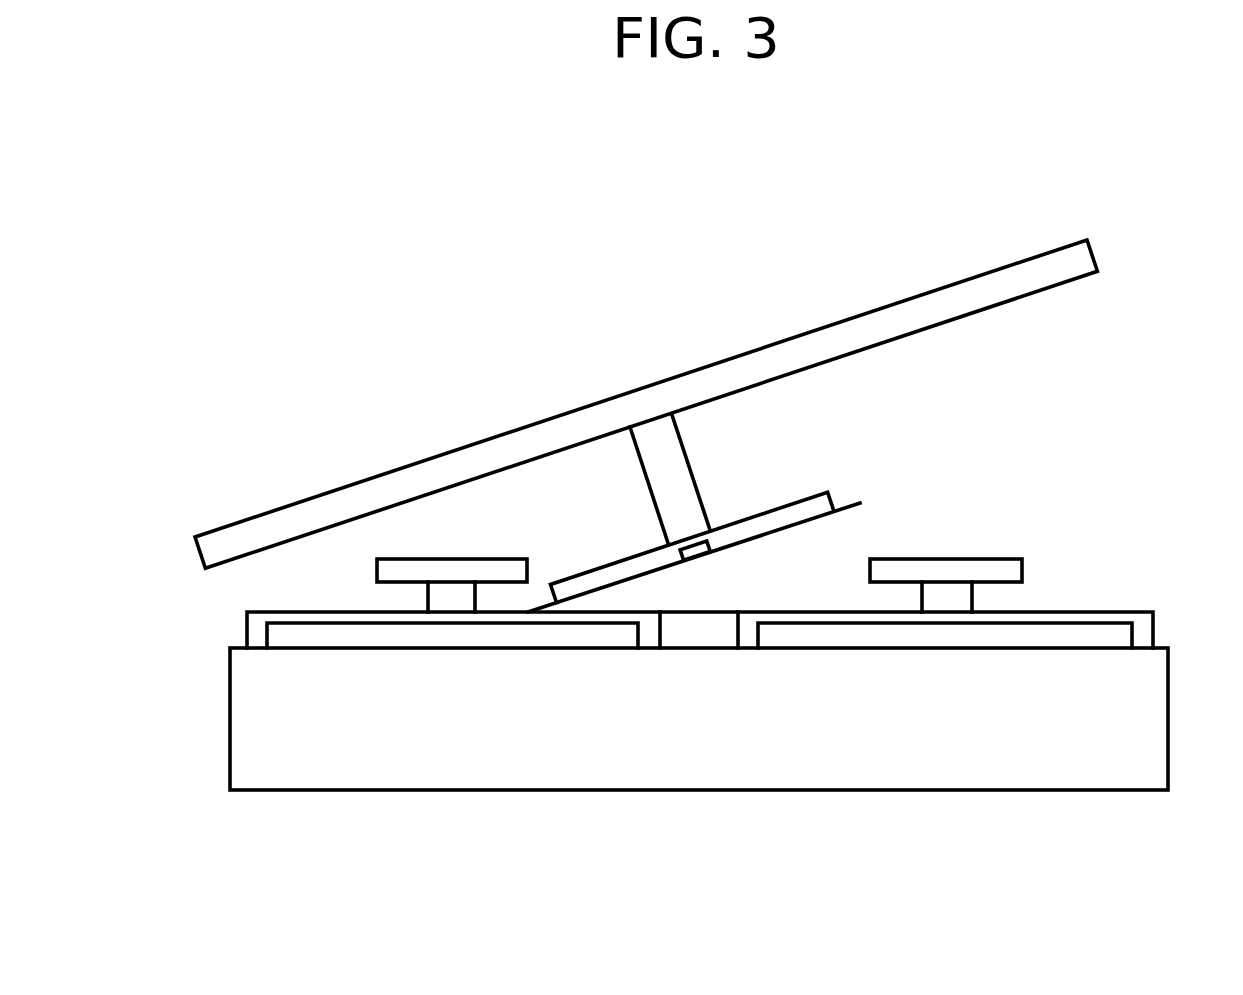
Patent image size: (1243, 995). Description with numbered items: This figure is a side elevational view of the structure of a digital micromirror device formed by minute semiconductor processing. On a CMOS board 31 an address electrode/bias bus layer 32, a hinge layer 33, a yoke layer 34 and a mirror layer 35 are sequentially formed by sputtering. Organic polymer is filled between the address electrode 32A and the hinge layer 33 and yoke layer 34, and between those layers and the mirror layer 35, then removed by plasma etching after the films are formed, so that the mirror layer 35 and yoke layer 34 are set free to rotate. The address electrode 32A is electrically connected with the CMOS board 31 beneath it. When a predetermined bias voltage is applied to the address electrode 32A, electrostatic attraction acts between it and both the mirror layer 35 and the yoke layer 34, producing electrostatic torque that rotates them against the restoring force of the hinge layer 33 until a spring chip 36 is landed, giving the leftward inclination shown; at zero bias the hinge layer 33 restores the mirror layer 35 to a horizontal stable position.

The CMOS board 31 is at (1145, 710).
The address electrode/bias bus layer 32 is at (253, 622).
The address electrode 32A is at (283, 642).
The hinge layer 33 is at (702, 553).
The yoke layer 34 is at (588, 578).
The mirror layer 35 is at (457, 467).
The spring chip 36 is at (850, 503).